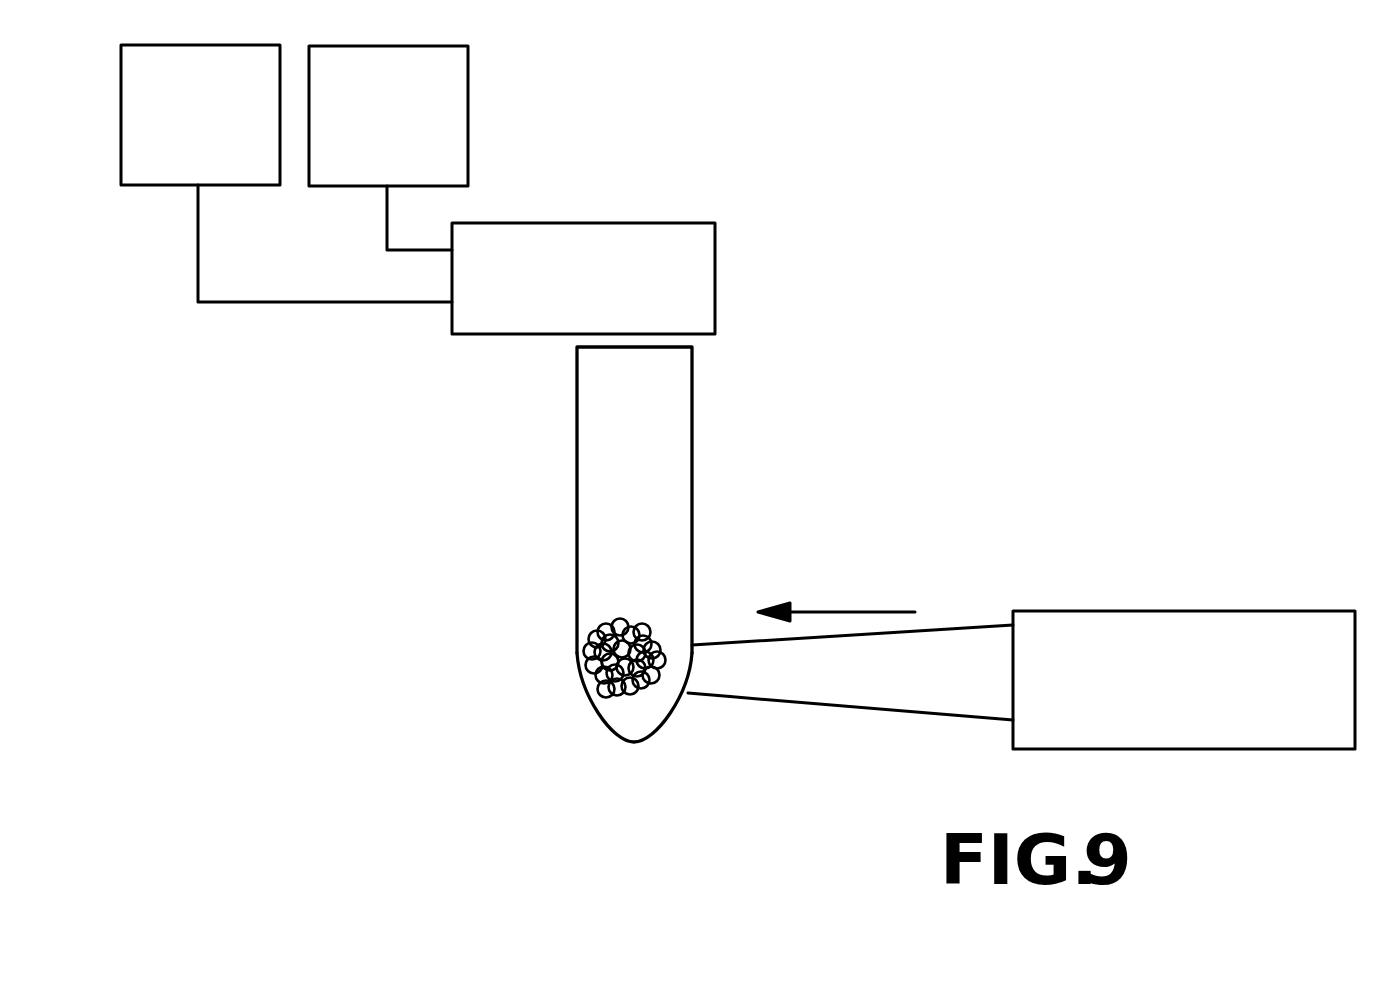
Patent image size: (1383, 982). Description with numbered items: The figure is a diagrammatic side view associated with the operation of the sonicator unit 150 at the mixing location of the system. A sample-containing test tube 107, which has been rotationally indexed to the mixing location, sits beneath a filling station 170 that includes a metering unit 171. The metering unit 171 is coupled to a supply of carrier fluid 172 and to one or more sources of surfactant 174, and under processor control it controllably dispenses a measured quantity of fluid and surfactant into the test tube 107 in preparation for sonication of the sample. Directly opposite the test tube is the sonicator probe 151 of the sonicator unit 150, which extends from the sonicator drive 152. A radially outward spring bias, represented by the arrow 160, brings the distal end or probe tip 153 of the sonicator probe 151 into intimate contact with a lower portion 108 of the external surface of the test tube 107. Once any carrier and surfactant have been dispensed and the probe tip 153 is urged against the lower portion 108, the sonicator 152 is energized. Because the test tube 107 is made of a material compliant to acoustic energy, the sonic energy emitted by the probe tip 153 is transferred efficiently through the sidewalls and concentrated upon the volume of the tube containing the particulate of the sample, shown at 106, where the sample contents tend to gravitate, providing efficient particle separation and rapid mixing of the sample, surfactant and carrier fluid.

The sample particulate 106 is at (560, 678).
The test tube 107 is at (692, 497).
The lower portion of test tube 108 is at (692, 630).
The sonicator unit 150 is at (1180, 612).
The sonicator probe 151 is at (850, 712).
The sonicator 152 is at (1162, 731).
The sonicator probe tip 153 is at (683, 693).
The arrow representing spring bias 160 is at (875, 611).
The filling station 170 is at (715, 280).
The metering unit 171 is at (563, 308).
The carrier fluid supply 172 is at (178, 164).
The surfactant source 174 is at (367, 148).